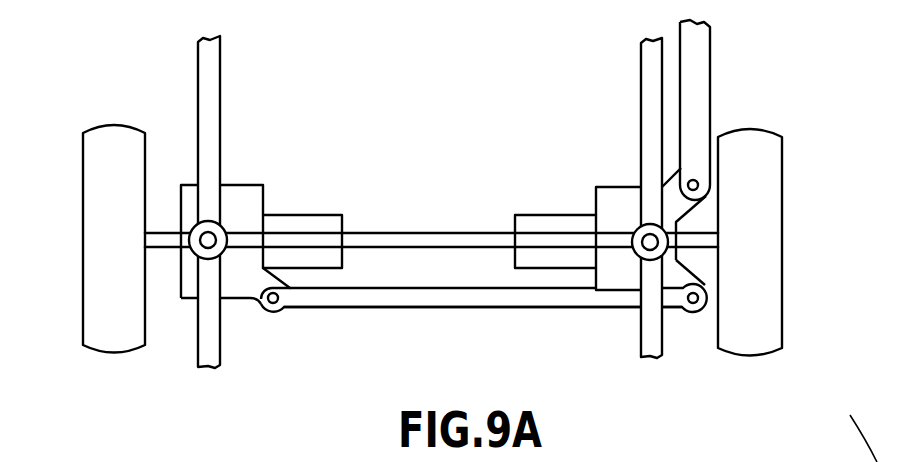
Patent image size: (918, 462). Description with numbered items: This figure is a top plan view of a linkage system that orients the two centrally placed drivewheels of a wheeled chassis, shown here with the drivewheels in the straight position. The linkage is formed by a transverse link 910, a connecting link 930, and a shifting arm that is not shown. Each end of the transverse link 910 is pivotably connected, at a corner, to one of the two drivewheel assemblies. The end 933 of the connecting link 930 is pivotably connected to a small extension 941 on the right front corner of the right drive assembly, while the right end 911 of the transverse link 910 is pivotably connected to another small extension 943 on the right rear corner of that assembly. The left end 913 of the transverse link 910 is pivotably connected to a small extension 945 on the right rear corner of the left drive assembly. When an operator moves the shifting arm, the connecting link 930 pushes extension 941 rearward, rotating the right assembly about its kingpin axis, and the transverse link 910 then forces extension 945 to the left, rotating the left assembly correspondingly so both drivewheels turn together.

The transverse link 910 is at (473, 310).
The right end 911 is at (667, 305).
The left end 913 is at (332, 302).
The connecting link 930 is at (703, 100).
The end 933 is at (705, 164).
The small extension 941 is at (680, 220).
The knuckle arm 943 is at (685, 279).
The small extension 945 is at (255, 310).